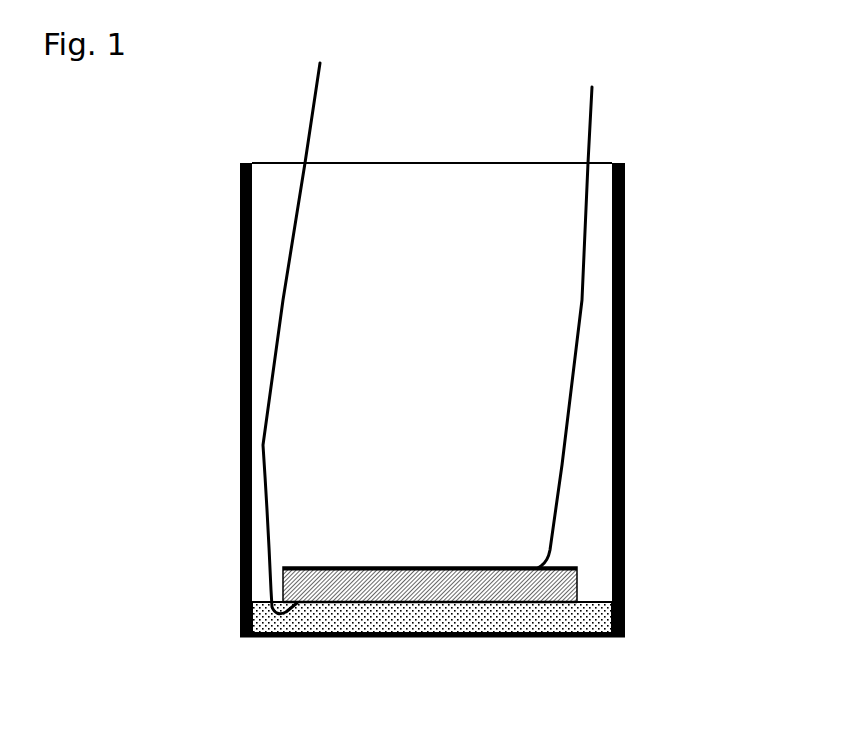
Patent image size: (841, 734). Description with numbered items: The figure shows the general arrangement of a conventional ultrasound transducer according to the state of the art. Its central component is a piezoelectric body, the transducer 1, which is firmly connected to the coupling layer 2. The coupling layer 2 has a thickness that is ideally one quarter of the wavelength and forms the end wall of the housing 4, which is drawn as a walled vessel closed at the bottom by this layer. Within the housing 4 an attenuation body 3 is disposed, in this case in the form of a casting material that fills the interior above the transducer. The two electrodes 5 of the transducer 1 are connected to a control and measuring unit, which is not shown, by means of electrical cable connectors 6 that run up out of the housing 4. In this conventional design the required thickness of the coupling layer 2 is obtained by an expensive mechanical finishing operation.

The transducer 1 is at (353, 580).
The coupling layer 2 is at (342, 625).
The attenuation body 3 is at (408, 400).
The housing 4 is at (625, 548).
The electrodes 5 is at (488, 602).
The electrical cable connectors 6 is at (585, 130).